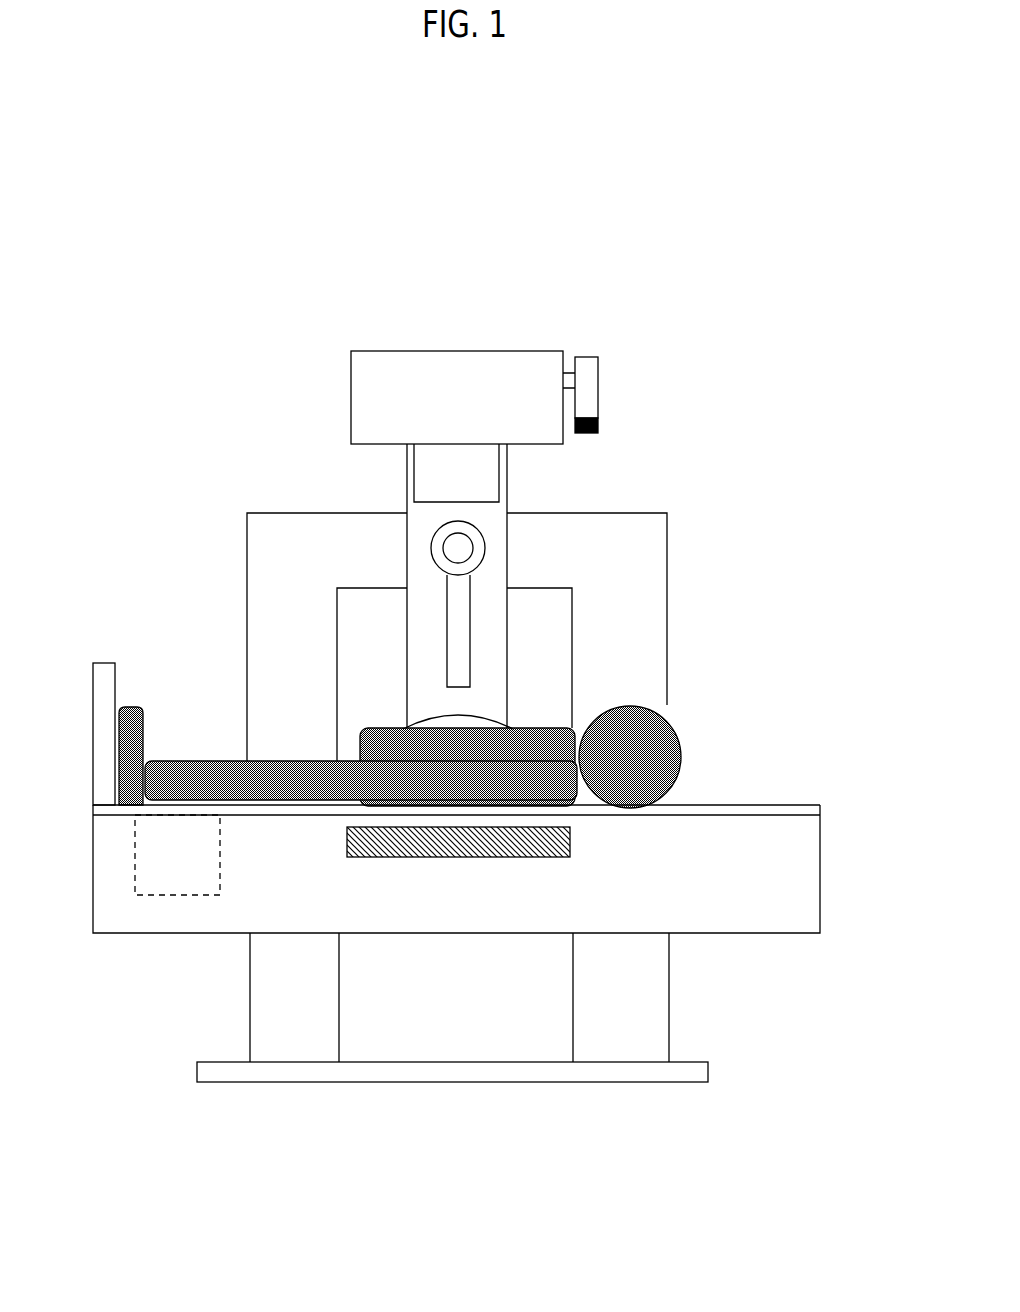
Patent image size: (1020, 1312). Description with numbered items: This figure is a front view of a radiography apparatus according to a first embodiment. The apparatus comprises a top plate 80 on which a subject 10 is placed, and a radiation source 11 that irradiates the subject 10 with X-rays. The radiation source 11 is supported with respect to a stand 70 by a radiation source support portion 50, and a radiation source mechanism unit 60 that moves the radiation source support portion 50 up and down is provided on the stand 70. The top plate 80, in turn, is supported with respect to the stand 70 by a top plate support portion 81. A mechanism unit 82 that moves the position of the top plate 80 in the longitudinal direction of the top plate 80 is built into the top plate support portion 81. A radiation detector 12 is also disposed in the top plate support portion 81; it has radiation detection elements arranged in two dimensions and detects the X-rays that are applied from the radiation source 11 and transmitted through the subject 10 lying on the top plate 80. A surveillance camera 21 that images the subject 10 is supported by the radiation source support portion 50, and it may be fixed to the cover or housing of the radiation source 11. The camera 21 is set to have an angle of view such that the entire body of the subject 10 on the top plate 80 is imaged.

The subject 10 is at (665, 755).
The radiation source 11 is at (488, 367).
The radiation detector 12 is at (570, 847).
The surveillance camera 21 is at (598, 393).
The radiation source support portion 50 is at (507, 493).
The radiation source mechanism unit 60 is at (553, 690).
The stand 70 is at (650, 580).
The top plate 80 is at (818, 804).
The top plate support portion 81 is at (815, 882).
The mechanism unit 82 is at (143, 883).